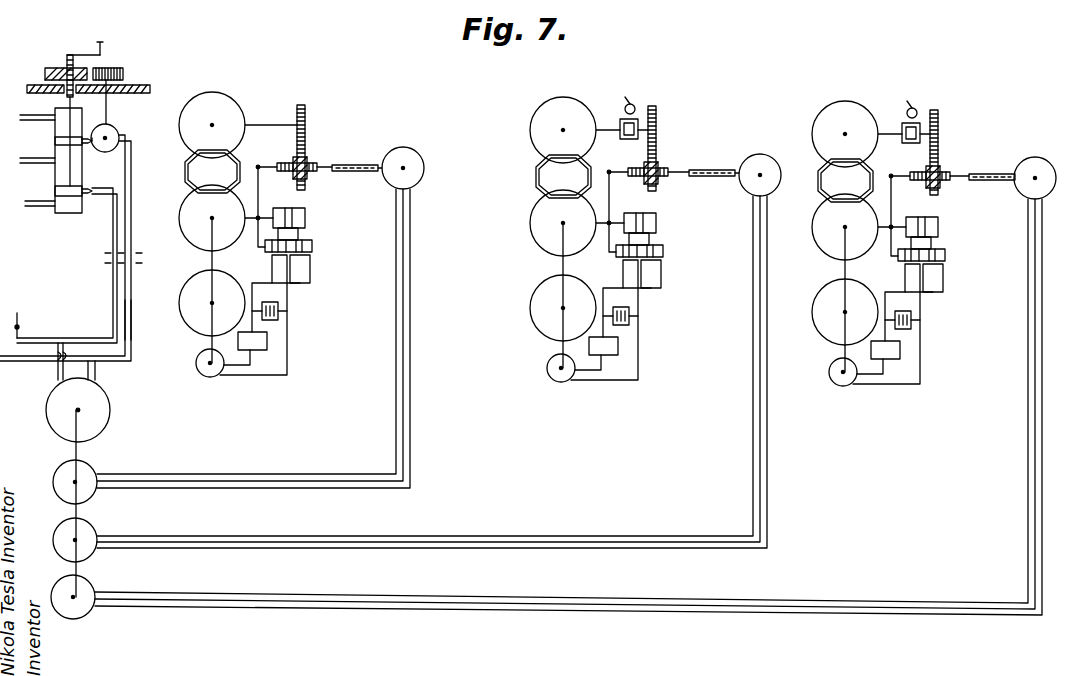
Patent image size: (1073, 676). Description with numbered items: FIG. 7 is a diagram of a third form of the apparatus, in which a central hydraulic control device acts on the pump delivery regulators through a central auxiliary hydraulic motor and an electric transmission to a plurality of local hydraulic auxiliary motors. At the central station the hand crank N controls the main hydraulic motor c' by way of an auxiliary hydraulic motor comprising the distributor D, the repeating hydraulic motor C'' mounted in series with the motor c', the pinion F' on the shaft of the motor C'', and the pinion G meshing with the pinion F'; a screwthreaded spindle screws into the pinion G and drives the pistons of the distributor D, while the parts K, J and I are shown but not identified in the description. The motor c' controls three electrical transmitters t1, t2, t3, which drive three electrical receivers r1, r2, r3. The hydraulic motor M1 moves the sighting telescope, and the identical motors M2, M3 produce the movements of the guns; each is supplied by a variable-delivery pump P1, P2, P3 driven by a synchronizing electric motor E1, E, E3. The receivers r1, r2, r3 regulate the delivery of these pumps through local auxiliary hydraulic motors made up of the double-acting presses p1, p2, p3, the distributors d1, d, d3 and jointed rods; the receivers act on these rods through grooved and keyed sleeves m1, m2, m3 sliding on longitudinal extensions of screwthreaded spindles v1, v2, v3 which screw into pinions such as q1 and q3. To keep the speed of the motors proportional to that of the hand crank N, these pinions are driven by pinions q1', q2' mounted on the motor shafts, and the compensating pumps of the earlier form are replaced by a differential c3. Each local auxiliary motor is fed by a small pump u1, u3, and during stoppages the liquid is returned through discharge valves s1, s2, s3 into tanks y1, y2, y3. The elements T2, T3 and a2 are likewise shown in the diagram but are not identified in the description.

The adjusting screw K is at (67, 55).
The hand crank N is at (104, 45).
The pinion G is at (45, 73).
The pinion F' is at (128, 92).
The repeating hydraulic motor C'' is at (115, 132).
The distributor D is at (56, 155).
The supply pipe J is at (12, 313).
The pipe I is at (131, 320).
The main hydraulic motor c' is at (61, 487).
The electrical transmitter t1 is at (58, 478).
The electrical transmitter t2 is at (88, 530).
The electrical transmitter t3 is at (90, 592).
The hydraulic motor M1 is at (227, 121).
The pinion q1' is at (320, 143).
The screwthreaded spindle v1 is at (294, 157).
The pinion q1 is at (314, 177).
The grooved and keyed sleeve m1 is at (357, 156).
The electrical receiver r1 is at (412, 159).
The pump of variable delivery P1 is at (194, 218).
The double-acting press p1 is at (302, 224).
The distributor d1 is at (300, 261).
The discharge valve s1 is at (282, 307).
The tank y1 is at (278, 339).
The synchronizing electric motor E1 is at (194, 303).
The small pump u1 is at (208, 375).
The hydraulic motor M2 is at (563, 114).
The differential c3 is at (621, 118).
The pinion T2 is at (643, 96).
The pinion q2' is at (668, 148).
The screwthreaded spindle v2 is at (648, 162).
The pinion q3 is at (658, 185).
The grooved and keyed sleeve m2 is at (714, 161).
The electrical receiver r2 is at (760, 164).
The pump of variable delivery P2 is at (552, 235).
The double-acting press p2 is at (653, 229).
The distributor d is at (647, 266).
The discharge valve s2 is at (633, 312).
The tank y2 is at (629, 344).
The synchronizing electric motor E is at (553, 318).
The small pulley a2 is at (550, 382).
The hydraulic motor M3 is at (845, 118).
The pinion T3 is at (925, 101).
The screwthreaded spindle v3 is at (929, 168).
The grooved and keyed sleeve m3 is at (992, 164).
The electrical receiver r3 is at (1035, 167).
The pump of variable delivery P3 is at (831, 233).
The double-acting press p3 is at (935, 233).
The distributor d3 is at (933, 270).
The discharge valve s3 is at (915, 316).
The tank y3 is at (911, 348).
The synchronizing electric motor E3 is at (828, 316).
The small pump u3 is at (838, 385).